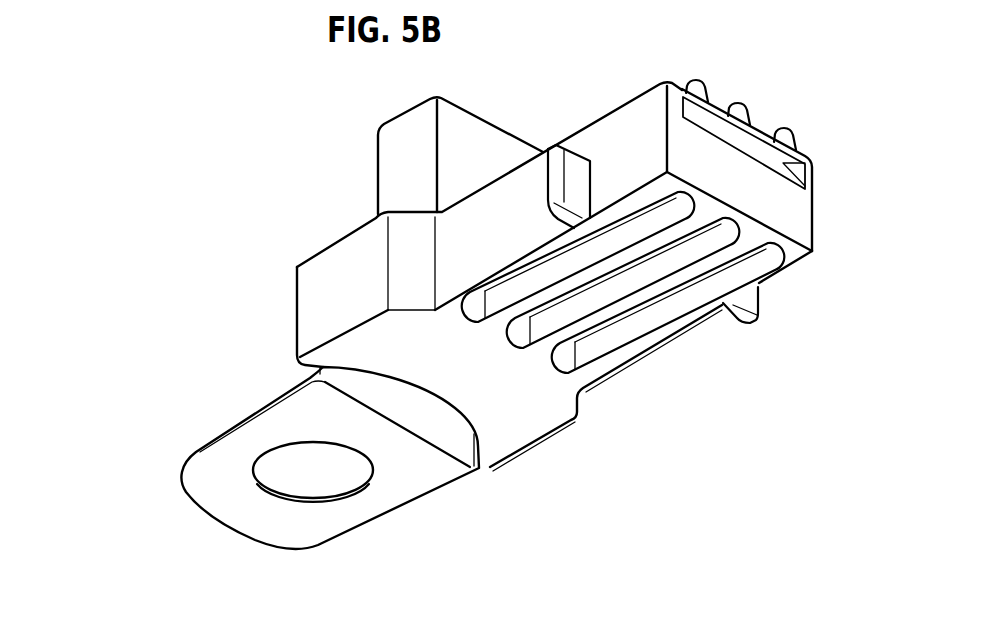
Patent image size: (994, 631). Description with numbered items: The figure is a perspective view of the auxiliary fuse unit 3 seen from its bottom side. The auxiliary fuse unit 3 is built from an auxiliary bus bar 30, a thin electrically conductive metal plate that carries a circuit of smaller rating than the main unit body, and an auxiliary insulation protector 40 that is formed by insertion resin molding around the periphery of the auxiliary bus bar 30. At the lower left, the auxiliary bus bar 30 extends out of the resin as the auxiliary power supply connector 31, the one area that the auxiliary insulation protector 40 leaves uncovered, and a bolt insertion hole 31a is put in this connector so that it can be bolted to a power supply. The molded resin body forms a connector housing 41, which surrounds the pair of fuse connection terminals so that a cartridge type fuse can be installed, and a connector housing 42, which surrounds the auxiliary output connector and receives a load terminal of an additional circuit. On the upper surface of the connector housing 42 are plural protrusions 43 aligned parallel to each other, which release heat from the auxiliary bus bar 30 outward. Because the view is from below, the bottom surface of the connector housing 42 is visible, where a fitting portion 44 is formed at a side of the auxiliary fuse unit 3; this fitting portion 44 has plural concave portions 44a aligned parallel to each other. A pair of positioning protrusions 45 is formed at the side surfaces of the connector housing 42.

The auxiliary fuse unit 3 is at (211, 306).
The auxiliary bus bar 30 is at (202, 435).
The auxiliary power supply connector 31 is at (222, 487).
The bolt insertion hole 31a is at (322, 490).
The auxiliary insulation protector 40 is at (532, 452).
The connector housing 41 is at (403, 157).
The connector housing 42 is at (634, 152).
The protrusions 43 is at (708, 88).
The fitting portion 44 is at (677, 283).
The concave portions 44a is at (563, 282).
The positioning protrusions 45 is at (551, 152).